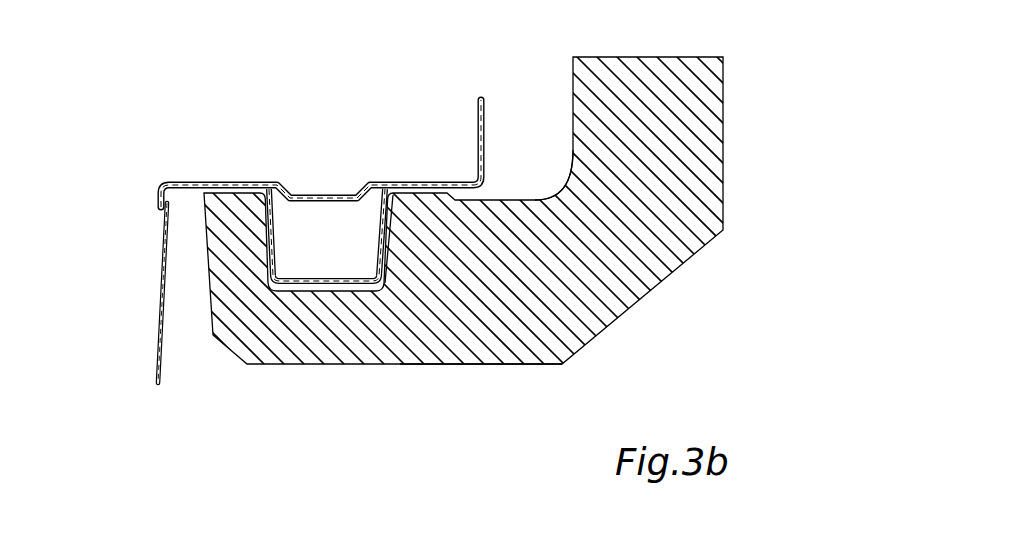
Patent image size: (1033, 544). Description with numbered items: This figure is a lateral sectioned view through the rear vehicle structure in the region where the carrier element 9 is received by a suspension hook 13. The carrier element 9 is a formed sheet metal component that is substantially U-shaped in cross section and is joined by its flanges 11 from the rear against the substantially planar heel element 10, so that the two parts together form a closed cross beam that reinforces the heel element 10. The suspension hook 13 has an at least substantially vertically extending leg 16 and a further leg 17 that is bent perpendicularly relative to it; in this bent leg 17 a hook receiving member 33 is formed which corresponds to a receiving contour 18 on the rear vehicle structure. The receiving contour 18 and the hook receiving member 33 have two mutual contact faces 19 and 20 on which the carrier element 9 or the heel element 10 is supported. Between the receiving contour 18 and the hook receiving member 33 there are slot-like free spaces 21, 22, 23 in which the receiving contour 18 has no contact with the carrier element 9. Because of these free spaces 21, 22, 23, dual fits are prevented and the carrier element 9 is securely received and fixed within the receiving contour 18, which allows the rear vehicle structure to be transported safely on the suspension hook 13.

The carrier element 9 is at (300, 287).
The heel element 10 is at (377, 187).
The flanges 11 is at (190, 188).
The suspension hook 13 is at (698, 114).
The vertically extending leg 16 is at (693, 203).
The leg 17 is at (496, 348).
The receiving contour 18 is at (350, 299).
The contact face 19 is at (240, 190).
The contact face 20 is at (268, 256).
The free space 21 is at (410, 190).
The free space 22 is at (281, 300).
The free space 23 is at (388, 266).
The hook receiving member 33 is at (337, 310).